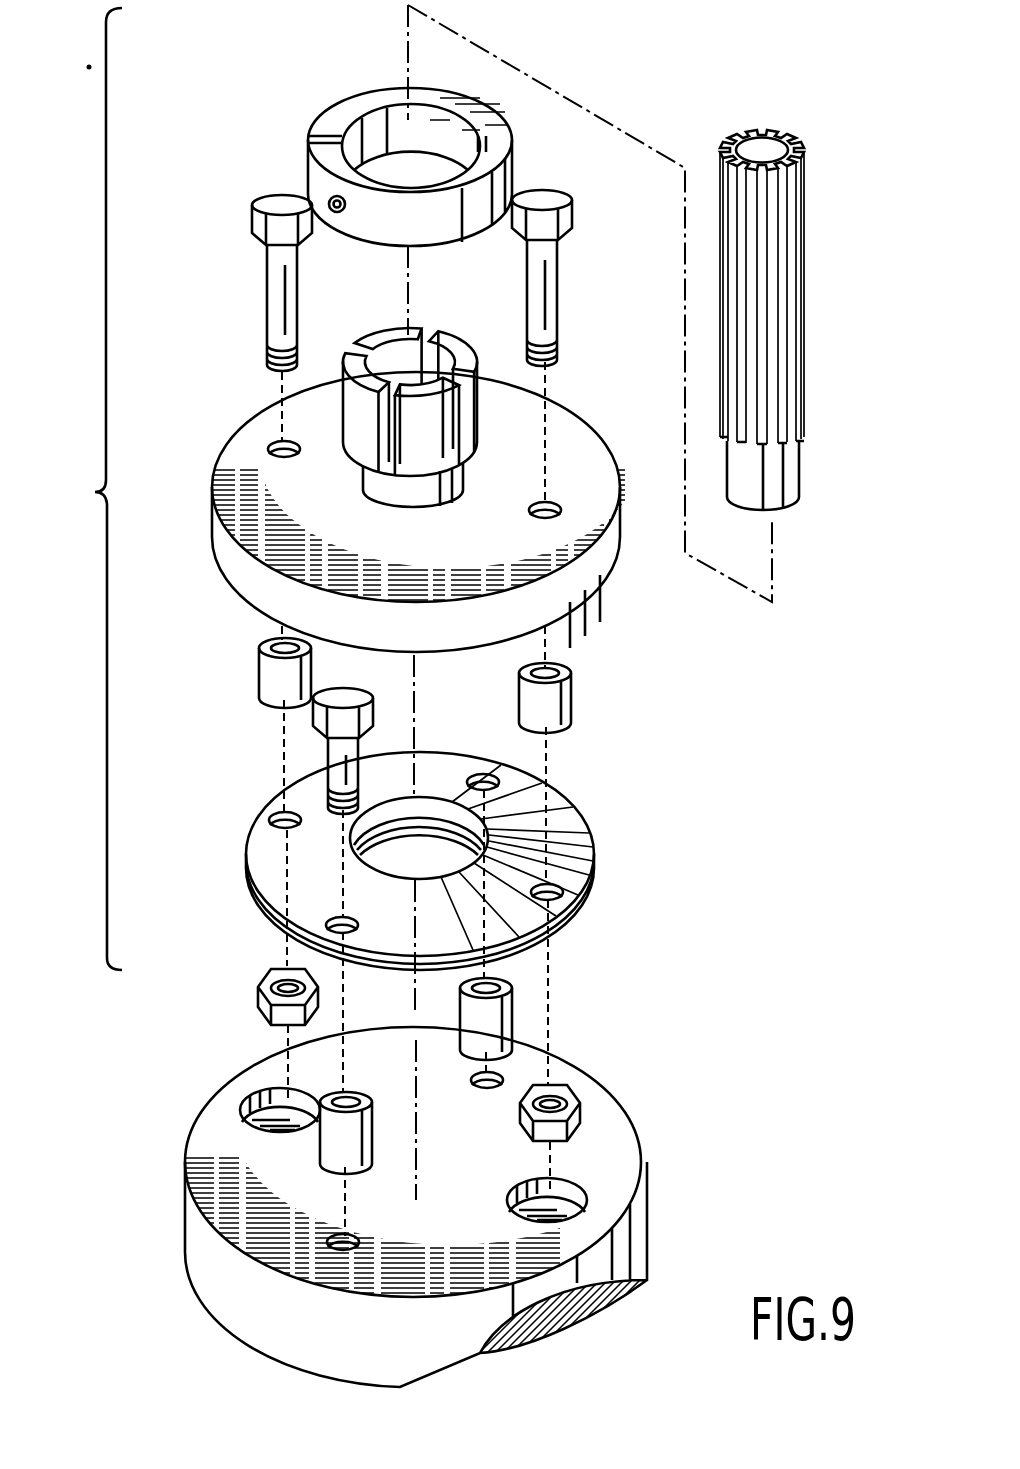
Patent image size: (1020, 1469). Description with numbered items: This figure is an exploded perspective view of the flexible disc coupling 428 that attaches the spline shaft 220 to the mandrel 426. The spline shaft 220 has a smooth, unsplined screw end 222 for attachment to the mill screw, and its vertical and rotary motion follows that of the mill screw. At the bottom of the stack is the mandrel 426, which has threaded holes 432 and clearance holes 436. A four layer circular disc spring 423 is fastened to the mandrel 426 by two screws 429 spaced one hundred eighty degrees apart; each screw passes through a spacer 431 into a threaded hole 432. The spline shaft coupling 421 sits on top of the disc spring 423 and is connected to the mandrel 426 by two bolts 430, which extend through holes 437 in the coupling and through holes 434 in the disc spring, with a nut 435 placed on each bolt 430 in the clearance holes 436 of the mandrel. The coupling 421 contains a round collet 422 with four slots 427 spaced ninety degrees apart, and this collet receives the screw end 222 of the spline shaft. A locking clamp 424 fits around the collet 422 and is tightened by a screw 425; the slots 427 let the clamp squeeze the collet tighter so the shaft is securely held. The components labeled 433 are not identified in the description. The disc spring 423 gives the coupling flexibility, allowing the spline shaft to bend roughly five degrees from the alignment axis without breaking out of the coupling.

The spline shaft 220 is at (688, 92).
The screw end 222 is at (800, 483).
The spline shaft coupling 421 is at (607, 453).
The collet 422 is at (350, 444).
The disc spring 423 is at (258, 840).
The locking clamp 424 is at (344, 106).
The screw 425 is at (341, 214).
The mandrel 426 is at (612, 1101).
The slots 427 is at (412, 482).
The flexible disc coupling 428 is at (83, 489).
The screws 429 is at (347, 704).
The bolts 430 is at (268, 312).
The spacer 431 is at (512, 1020).
The threaded holes 432 is at (470, 1072).
The spacer 433 is at (258, 682).
The holes 434 is at (282, 814).
The nut 435 is at (258, 1000).
The clearance holes 436 is at (263, 1092).
The holes 437 is at (278, 447).